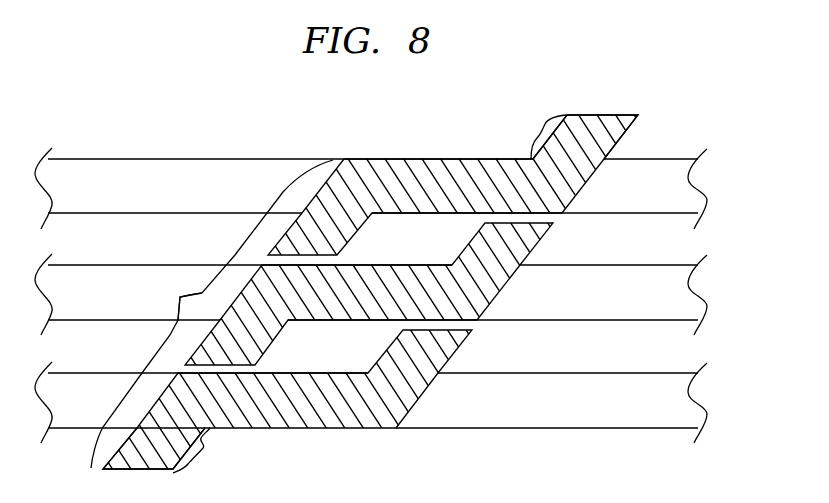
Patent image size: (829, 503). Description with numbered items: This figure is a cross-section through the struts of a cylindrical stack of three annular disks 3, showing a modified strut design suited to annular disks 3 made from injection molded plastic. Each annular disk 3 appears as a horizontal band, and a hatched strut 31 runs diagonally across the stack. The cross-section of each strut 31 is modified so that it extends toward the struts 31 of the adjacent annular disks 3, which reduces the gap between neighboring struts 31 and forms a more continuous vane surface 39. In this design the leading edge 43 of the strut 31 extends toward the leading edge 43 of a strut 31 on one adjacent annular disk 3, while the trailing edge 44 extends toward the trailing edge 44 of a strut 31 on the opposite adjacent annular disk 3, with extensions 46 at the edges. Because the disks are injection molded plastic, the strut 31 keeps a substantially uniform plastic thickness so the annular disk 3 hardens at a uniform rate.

The annular disk 3 is at (173, 169).
The strut 31 is at (432, 159).
The vane surface 39 is at (180, 297).
The leading edge 43 is at (119, 449).
The trailing edge 44 is at (627, 131).
The extension 46 is at (369, 297).